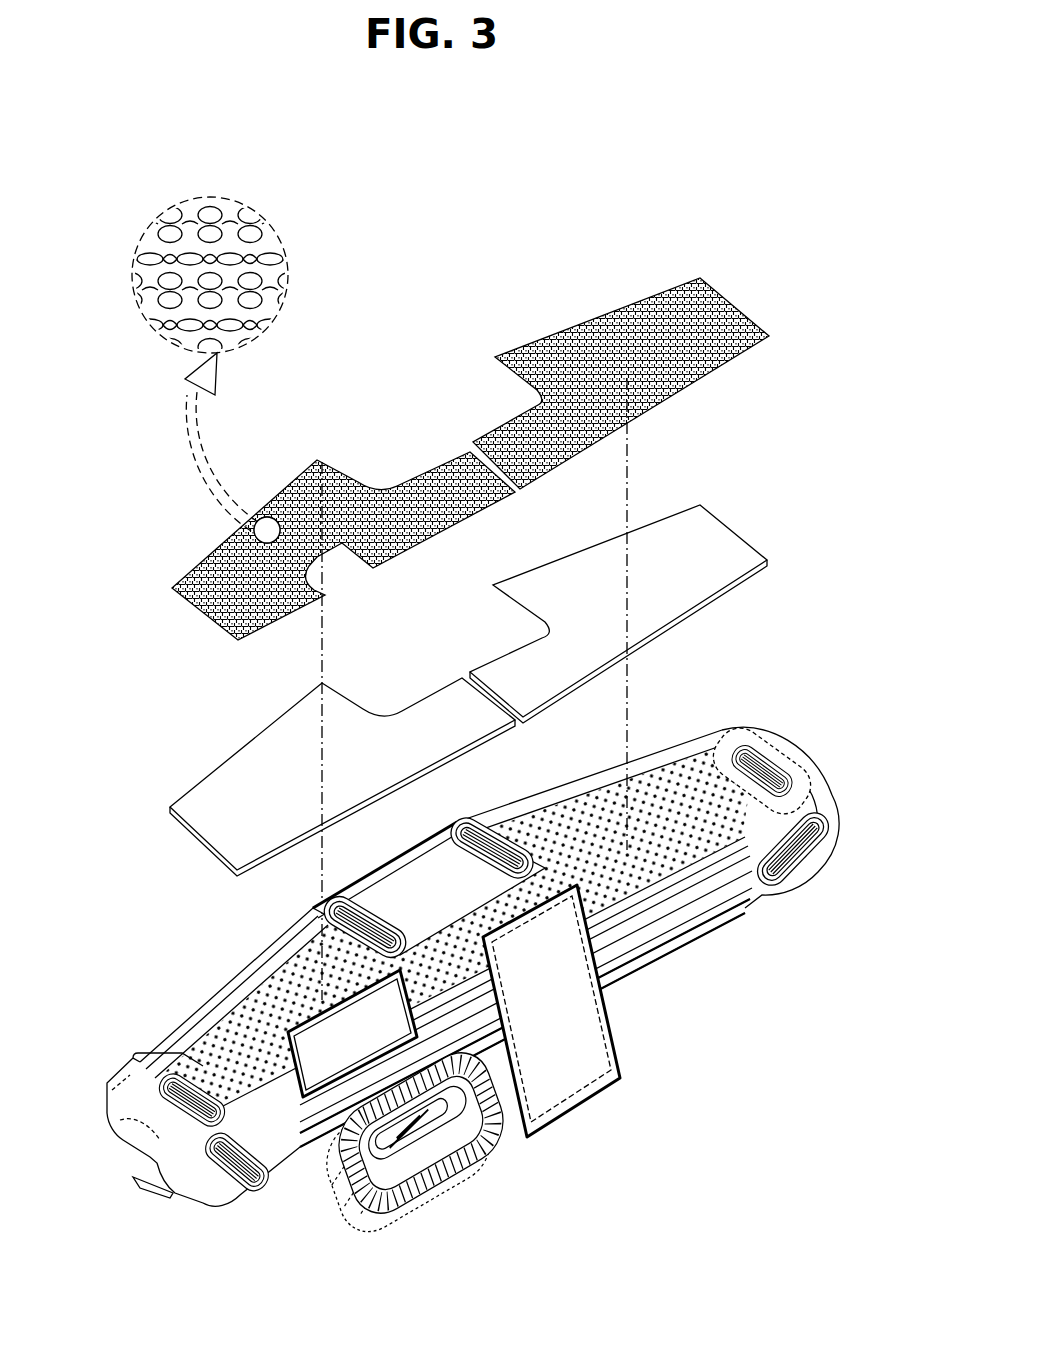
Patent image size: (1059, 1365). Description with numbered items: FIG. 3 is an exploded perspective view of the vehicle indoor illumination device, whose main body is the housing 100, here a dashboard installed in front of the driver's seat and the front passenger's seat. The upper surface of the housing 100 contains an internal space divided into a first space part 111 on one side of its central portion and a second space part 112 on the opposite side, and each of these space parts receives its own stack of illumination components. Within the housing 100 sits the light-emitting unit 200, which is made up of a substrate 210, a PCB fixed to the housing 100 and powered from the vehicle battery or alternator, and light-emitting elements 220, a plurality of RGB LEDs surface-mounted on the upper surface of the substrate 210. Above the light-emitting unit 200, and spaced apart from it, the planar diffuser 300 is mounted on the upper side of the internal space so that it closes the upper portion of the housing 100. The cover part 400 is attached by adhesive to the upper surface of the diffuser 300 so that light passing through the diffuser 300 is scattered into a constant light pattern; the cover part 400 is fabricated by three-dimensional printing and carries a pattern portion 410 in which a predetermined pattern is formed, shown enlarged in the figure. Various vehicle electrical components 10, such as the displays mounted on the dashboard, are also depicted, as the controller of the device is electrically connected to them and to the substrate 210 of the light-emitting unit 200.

The vehicle electrical components 10 is at (577, 1085).
The housing 100 is at (183, 1023).
The first space part 111 is at (247, 998).
The second space part 112 is at (598, 795).
The light-emitting unit 200 is at (818, 675).
The substrate 210 is at (720, 795).
The light-emitting elements 220 is at (700, 782).
The diffuser 300 is at (698, 530).
The cover part 400 is at (322, 458).
The pattern portion 410 is at (228, 217).